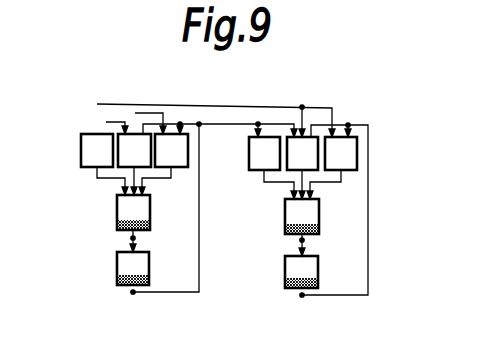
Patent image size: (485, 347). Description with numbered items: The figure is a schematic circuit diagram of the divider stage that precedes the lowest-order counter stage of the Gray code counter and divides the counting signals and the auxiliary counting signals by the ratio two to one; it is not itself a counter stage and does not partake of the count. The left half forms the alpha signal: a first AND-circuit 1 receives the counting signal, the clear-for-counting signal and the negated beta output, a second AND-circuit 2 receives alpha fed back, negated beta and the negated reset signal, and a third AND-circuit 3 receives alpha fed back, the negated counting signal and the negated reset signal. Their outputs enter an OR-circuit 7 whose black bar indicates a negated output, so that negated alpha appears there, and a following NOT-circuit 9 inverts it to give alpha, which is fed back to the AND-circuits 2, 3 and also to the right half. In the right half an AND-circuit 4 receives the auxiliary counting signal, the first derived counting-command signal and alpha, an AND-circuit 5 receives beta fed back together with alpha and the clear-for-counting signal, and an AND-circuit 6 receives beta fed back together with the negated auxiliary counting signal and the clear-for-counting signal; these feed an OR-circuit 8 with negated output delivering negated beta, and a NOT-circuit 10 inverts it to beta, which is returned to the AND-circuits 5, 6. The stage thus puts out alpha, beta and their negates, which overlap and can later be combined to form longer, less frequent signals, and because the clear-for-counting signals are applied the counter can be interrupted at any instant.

The AND-circuit 1 is at (106, 126).
The AND-circuit 2 is at (135, 126).
The AND-circuit 3 is at (172, 126).
The AND-circuit 4 is at (264, 129).
The AND-circuit 5 is at (232, 199).
The AND-circuit 6 is at (341, 129).
The OR-circuit 7 is at (133, 238).
The OR-circuit 8 is at (302, 240).
The NOT-circuit 9 is at (133, 285).
The NOT-circuit 10 is at (302, 288).